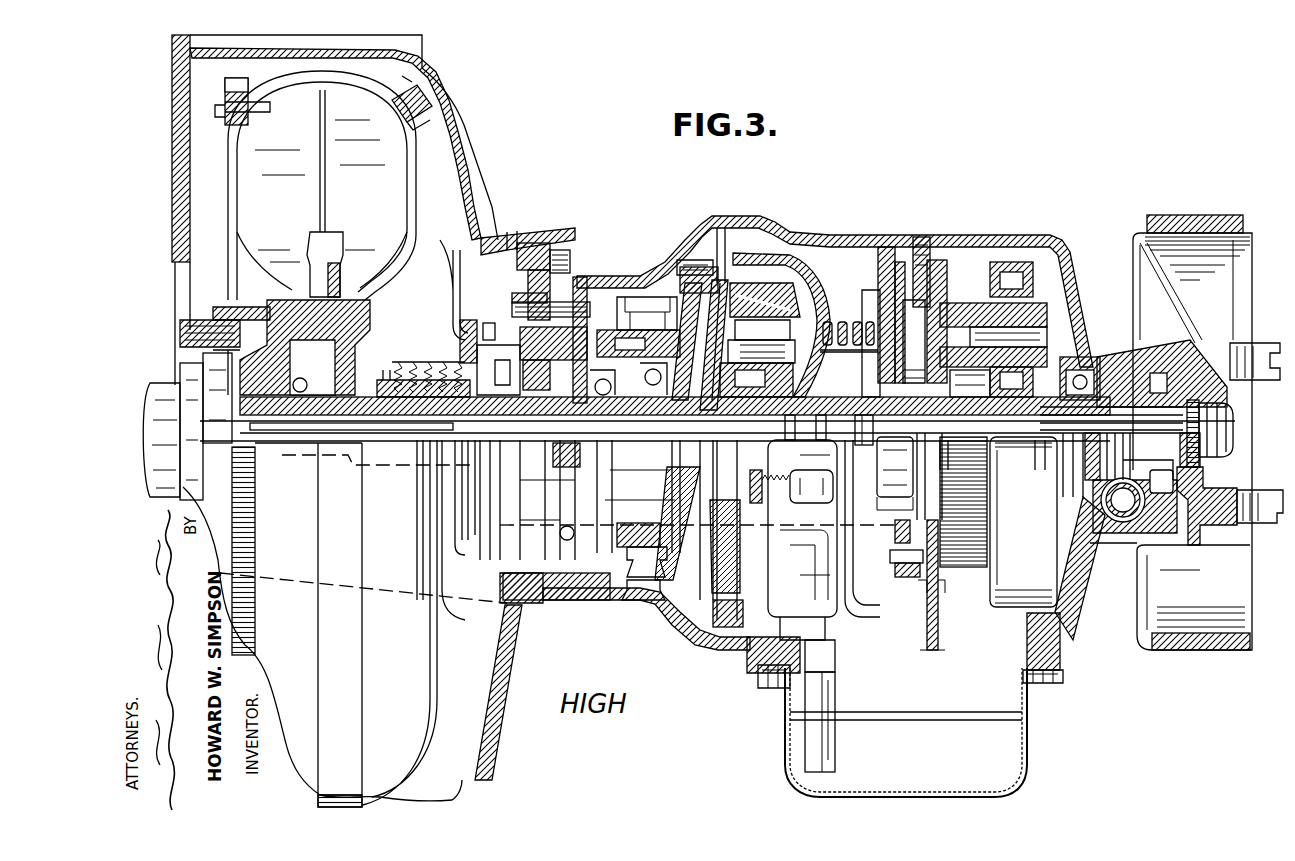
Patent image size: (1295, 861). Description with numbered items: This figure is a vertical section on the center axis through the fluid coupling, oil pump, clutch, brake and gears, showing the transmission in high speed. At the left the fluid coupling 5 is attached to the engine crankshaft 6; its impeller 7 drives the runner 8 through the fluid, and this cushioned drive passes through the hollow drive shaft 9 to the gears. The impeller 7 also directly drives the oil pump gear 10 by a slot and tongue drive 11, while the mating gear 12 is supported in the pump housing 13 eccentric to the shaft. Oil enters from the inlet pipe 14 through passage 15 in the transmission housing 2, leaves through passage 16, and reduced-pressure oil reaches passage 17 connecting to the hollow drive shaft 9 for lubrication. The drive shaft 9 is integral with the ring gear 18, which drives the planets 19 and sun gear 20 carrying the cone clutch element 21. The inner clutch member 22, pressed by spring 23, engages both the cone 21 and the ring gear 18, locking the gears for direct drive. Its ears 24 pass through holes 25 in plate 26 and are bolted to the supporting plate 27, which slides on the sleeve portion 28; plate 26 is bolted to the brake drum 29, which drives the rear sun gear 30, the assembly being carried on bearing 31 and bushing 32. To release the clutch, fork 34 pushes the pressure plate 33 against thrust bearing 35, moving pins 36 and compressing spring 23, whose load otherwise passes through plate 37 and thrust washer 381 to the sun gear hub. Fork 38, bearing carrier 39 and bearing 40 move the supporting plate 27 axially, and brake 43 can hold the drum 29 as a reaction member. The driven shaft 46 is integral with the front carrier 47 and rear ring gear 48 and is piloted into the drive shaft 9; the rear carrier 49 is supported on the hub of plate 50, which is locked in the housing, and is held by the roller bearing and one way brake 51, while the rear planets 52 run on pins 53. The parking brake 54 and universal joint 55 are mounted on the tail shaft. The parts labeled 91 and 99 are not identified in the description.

The transmission housing 2 is at (657, 617).
The fluid coupling 5 is at (430, 140).
The engine crankshaft 6 is at (157, 420).
The impeller 7 is at (322, 191).
The runner 8 is at (346, 193).
The drive shaft 9 is at (413, 433).
The oil pump gear 10 is at (540, 377).
The slot and tongue drive 11 is at (457, 413).
The mating gear 12 is at (497, 287).
The pump housing 13 is at (533, 297).
The inlet pipe 14 is at (833, 753).
The passage 15 is at (567, 533).
The passage 16 is at (563, 337).
The passage 17 is at (547, 413).
The ring gear 18 is at (828, 322).
The planets 19 is at (821, 440).
The sun gear 20 is at (791, 440).
The cone clutch element 21 is at (810, 300).
The inner clutch member 22 is at (787, 283).
The spring 23 is at (857, 322).
The legs or ears 24 is at (683, 280).
The holes 25 is at (697, 265).
The plate 26 is at (720, 277).
The supporting plate 27 is at (680, 330).
The sleeve portion 28 is at (640, 455).
The brake drum 29 is at (745, 320).
The rear sun gear 30 is at (990, 400).
The bearing 31 is at (603, 437).
The bushing 32 is at (896, 433).
The pressure plate 33 is at (905, 300).
The fork 34 is at (880, 260).
The thrust bearing 35 is at (933, 337).
The pins 36 is at (903, 250).
The plate 37 is at (877, 413).
The fork 38 is at (620, 583).
The thrust washer 381 is at (857, 440).
The bearing carrier 39 is at (617, 330).
The bearing 40 is at (600, 307).
The brake 43 is at (880, 290).
The driven shaft 46 is at (1047, 430).
The front carrier 47 is at (720, 230).
The rear ring gear 48 is at (1030, 300).
The rear carrier 49 is at (980, 313).
The plate 50 is at (945, 320).
The roller bearing and one way brake 51 is at (1047, 347).
The planets 52 is at (1027, 297).
The pins 53 is at (1043, 317).
The parking brake 54 is at (1157, 640).
The universal joint 55 is at (1263, 530).
The valve body 91 is at (773, 503).
The oil pan 99 is at (1003, 753).